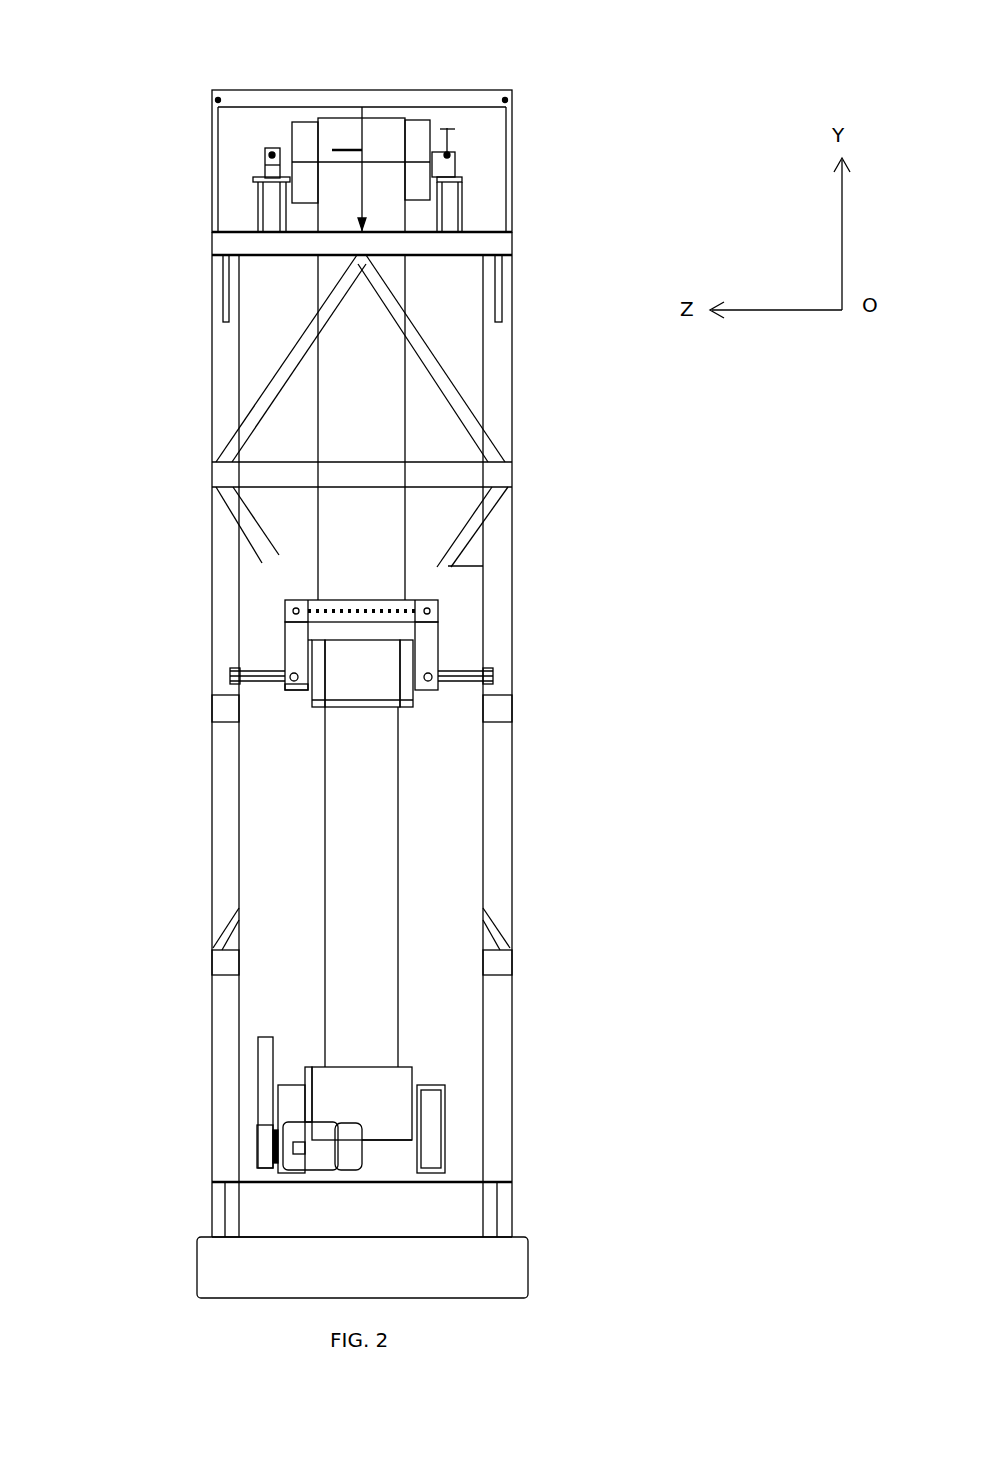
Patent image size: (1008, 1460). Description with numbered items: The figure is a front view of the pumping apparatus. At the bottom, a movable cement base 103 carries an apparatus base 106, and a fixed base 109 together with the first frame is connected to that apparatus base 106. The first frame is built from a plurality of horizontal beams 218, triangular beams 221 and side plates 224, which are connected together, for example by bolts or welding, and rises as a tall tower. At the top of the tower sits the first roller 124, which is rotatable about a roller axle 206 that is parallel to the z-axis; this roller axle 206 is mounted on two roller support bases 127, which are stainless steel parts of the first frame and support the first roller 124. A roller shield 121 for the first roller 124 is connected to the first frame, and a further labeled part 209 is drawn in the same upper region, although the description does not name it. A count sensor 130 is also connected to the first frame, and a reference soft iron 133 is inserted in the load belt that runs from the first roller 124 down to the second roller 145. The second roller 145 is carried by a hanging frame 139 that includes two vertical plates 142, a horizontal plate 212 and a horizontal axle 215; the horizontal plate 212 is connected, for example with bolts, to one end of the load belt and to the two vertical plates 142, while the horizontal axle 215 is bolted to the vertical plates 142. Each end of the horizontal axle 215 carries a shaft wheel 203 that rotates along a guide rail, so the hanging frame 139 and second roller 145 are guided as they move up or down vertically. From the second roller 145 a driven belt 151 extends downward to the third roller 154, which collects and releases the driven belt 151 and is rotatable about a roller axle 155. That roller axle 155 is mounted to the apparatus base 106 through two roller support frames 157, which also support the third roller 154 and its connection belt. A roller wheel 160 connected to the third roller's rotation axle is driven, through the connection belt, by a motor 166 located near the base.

The movable cement base 103 is at (304, 1257).
The apparatus base 106 is at (303, 1199).
The fixed base 109 is at (296, 663).
The roller shield 121 is at (299, 224).
The first roller 124 is at (450, 175).
The roller support base 127 is at (270, 163).
The count sensor 130 is at (447, 135).
The reference soft iron 133 is at (233, 102).
The hanging frame 139 is at (462, 585).
The vertical plates 142 is at (386, 630).
The second roller 145 is at (468, 670).
The driven belt 151 is at (350, 661).
The third roller 154 is at (475, 1075).
The roller axle 155 is at (308, 1118).
The roller support frame 157 is at (280, 1090).
The roller wheel 160 is at (168, 1057).
The motor 166 is at (170, 1086).
The shaft wheel 203 is at (560, 690).
The roller axle 206 is at (270, 155).
The shaft 209 is at (483, 169).
The horizontal plate 212 is at (357, 603).
The horizontal axle 215 is at (290, 692).
The horizontal beams 218 is at (470, 245).
The triangular beams 221 is at (470, 390).
The side plates 224 is at (212, 845).